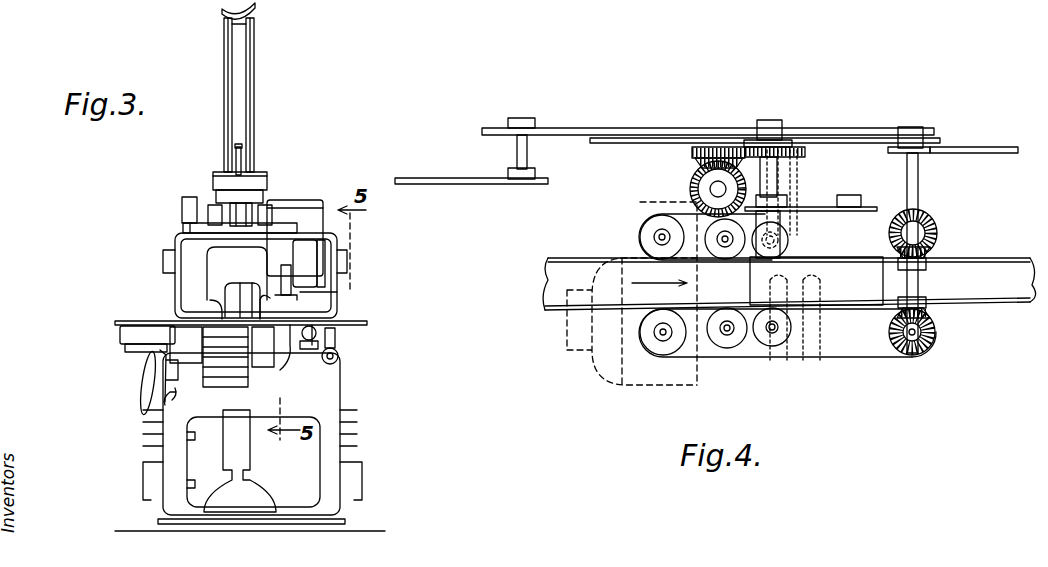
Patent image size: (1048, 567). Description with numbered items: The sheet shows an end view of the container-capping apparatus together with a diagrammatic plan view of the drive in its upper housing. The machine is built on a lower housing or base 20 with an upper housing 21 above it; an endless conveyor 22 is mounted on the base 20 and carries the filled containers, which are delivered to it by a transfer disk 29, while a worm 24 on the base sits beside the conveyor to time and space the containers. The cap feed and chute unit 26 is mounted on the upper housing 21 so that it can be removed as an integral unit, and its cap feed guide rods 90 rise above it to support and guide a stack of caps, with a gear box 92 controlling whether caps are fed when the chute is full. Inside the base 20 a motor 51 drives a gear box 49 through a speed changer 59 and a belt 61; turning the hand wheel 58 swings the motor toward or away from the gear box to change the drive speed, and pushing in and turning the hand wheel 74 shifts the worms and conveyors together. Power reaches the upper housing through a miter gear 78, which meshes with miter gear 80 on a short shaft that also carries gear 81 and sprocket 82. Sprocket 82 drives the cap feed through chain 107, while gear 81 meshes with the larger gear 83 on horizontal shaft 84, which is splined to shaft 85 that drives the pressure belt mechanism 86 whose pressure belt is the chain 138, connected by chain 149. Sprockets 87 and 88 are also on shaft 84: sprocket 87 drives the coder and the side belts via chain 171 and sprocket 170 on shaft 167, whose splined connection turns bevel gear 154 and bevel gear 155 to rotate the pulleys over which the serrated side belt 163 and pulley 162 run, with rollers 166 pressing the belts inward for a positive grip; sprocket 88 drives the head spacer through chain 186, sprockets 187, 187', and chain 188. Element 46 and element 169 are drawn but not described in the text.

In FIG. 3, the lower housing or base 20 is at (322, 511).
In FIG. 3, the upper housing 21 is at (349, 306).
In FIG. 3, the endless conveyor 22 is at (232, 346).
In FIG. 4, the endless conveyor 22 is at (1013, 291).
In FIG. 3, the worm 24 is at (247, 293).
In FIG. 3, the cap feed and chute unit 26 is at (274, 187).
In FIG. 3, the transfer disk 29 is at (136, 320).
In FIG. 3, the control lever 46 is at (160, 402).
In FIG. 4, the gear box 49 is at (640, 202).
In FIG. 4, the motor 51 is at (600, 365).
In FIG. 3, the hand wheel 58 is at (184, 381).
In FIG. 4, the speed changer 59 is at (810, 362).
In FIG. 4, the belt 61 is at (792, 256).
In FIG. 3, the hand wheel 74 is at (150, 359).
In FIG. 4, the miter gear 78 is at (690, 190).
In FIG. 4, the miter gear 80 is at (700, 162).
In FIG. 4, the gear 81 is at (692, 152).
In FIG. 4, the sprocket 82 is at (722, 145).
In FIG. 4, the larger gear 83 is at (806, 152).
In FIG. 4, the horizontal shaft 84 is at (778, 169).
In FIG. 4, the shaft 85 is at (778, 199).
In FIG. 4, the pressure belt mechanism 86 is at (833, 240).
In FIG. 4, the sprocket 87 is at (762, 140).
In FIG. 4, the sprocket 88 is at (783, 128).
In FIG. 3, the cap feed guide rods 90 is at (256, 82).
In FIG. 3, the gear box 92 is at (320, 199).
In FIG. 4, the chain 107 is at (616, 143).
In FIG. 4, the chain 138 is at (863, 286).
In FIG. 4, the chain 149 is at (826, 207).
In FIG. 4, the bevel gear 154 is at (918, 262).
In FIG. 4, the bevel gear 155 is at (937, 233).
In FIG. 4, the pulley 162 is at (644, 243).
In FIG. 4, the belt 163 is at (883, 207).
In FIG. 4, the rollers 166 is at (730, 258).
In FIG. 4, the shaft 167 is at (918, 178).
In FIG. 4, the bar 169 is at (962, 147).
In FIG. 4, the sprocket 170 is at (918, 124).
In FIG. 4, the chain 171 is at (864, 129).
In FIG. 4, the chain 186 is at (655, 121).
In FIG. 4, the sprocket 187 is at (542, 132).
In FIG. 4, the sprocket 187' is at (544, 163).
In FIG. 4, the chain 188 is at (458, 171).